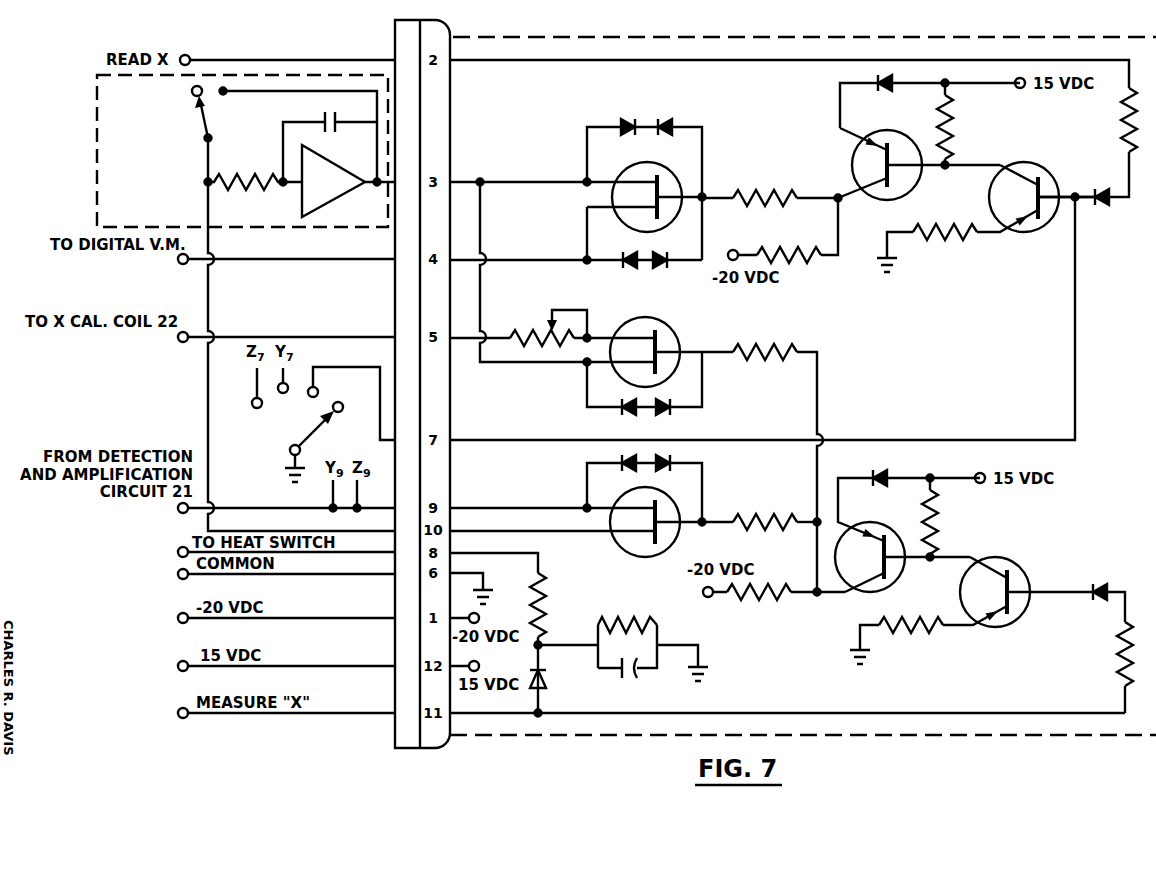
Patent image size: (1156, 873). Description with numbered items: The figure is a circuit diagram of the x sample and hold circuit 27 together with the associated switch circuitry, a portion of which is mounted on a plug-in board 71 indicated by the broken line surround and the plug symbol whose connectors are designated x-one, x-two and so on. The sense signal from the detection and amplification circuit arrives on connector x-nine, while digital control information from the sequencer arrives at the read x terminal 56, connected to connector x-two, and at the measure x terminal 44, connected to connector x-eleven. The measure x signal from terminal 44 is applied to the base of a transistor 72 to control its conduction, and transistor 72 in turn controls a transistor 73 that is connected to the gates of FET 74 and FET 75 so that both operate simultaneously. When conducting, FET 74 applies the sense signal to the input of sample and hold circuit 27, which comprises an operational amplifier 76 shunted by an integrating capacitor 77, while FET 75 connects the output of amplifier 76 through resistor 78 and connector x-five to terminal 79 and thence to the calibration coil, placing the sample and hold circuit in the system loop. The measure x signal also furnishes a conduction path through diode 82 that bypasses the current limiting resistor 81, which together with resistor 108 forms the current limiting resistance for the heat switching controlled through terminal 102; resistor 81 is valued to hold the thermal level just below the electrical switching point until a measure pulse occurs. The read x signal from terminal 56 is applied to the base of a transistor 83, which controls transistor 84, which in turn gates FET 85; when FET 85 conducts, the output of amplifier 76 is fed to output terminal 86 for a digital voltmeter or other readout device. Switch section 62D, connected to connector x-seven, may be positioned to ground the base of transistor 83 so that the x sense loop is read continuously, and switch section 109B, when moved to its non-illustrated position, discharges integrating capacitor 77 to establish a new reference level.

The read x terminal 56 is at (190, 54).
The x sample and hold circuit 27 is at (90, 152).
The switch section 109B is at (190, 122).
The capacitor 77 is at (333, 120).
The operational amplifier 76 is at (302, 198).
The output terminal 86 is at (180, 266).
The terminal 79 is at (179, 344).
The switch section D of mode switch 62D is at (276, 431).
The terminal 102 is at (178, 554).
The measure x terminal 44 is at (178, 716).
The plug-in board 71 is at (640, 37).
The resistor 78 is at (536, 336).
The FET 85 is at (630, 225).
The transistor 84 is at (885, 132).
The transistor 83 is at (1042, 178).
The FET 75 is at (668, 335).
The FET 74 is at (620, 549).
The transistor 73 is at (892, 585).
The transistor 72 is at (1017, 572).
The resistor 108 is at (546, 612).
The current limiting resistor 81 is at (614, 622).
The diode 82 is at (548, 686).